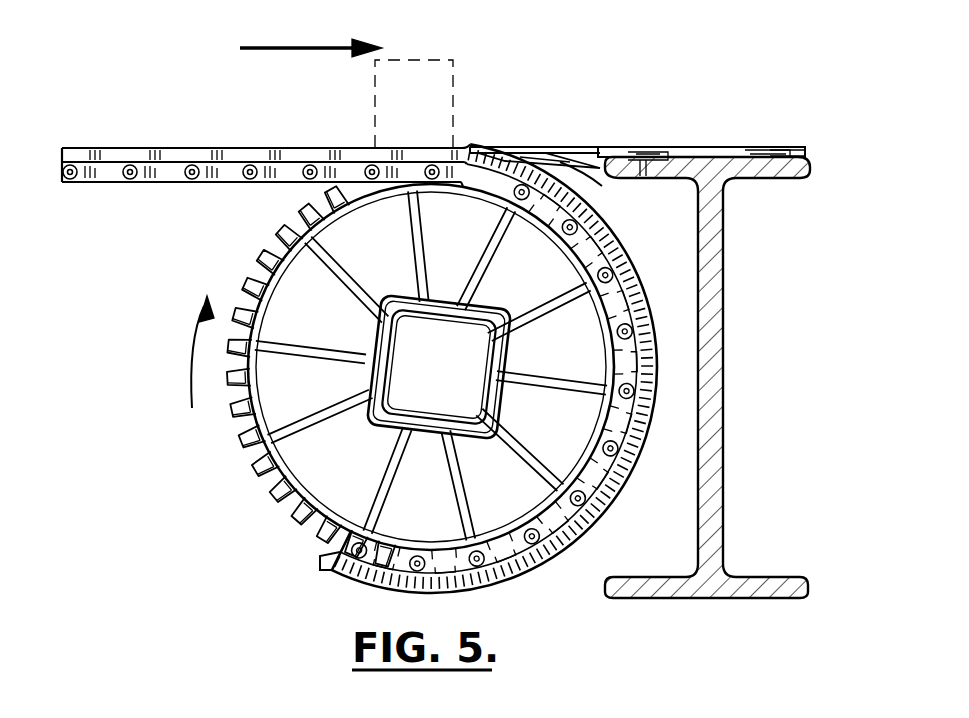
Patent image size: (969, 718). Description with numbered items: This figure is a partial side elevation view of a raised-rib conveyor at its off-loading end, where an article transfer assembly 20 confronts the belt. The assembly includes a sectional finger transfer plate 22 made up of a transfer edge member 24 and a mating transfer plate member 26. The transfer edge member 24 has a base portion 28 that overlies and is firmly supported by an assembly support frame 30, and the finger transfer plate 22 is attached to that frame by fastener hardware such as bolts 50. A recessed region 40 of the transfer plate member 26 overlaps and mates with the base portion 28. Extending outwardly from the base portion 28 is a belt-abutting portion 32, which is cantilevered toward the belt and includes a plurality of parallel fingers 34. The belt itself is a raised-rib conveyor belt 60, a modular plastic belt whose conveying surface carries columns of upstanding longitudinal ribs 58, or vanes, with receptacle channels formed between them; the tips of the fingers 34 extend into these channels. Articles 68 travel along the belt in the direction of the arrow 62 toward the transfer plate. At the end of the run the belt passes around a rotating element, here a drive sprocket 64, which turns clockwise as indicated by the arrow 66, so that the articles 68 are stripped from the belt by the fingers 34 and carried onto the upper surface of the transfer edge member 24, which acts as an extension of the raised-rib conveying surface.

The article transfer assembly 20 is at (731, 88).
The sectional finger transfer plate 22 is at (600, 146).
The transfer edge member 24 is at (580, 166).
The transfer plate member 26 is at (796, 150).
The base portion 28 is at (650, 165).
The assembly support frame 30 is at (723, 380).
The belt-abutting portion 32 is at (528, 151).
The fingers 34 is at (476, 147).
The recessed region 40 is at (632, 150).
The bolts 50 is at (656, 148).
The longitudinal ribs 58 is at (290, 148).
The raised-rib conveyor belt 60 is at (110, 182).
The arrow 62 is at (284, 48).
The drive sprocket 64 is at (325, 520).
The arrow 66 is at (190, 338).
The articles 68 is at (442, 95).